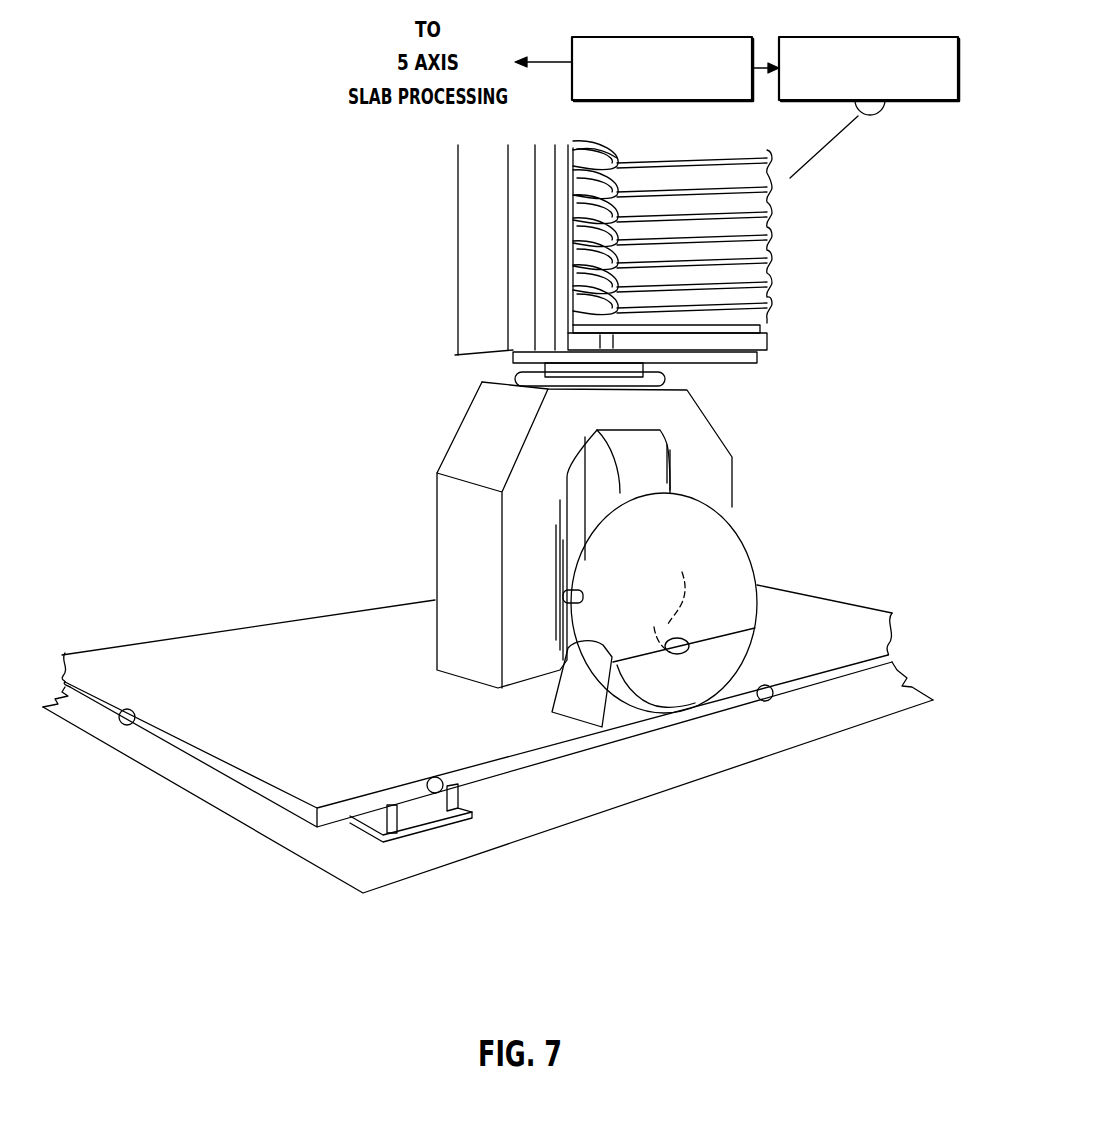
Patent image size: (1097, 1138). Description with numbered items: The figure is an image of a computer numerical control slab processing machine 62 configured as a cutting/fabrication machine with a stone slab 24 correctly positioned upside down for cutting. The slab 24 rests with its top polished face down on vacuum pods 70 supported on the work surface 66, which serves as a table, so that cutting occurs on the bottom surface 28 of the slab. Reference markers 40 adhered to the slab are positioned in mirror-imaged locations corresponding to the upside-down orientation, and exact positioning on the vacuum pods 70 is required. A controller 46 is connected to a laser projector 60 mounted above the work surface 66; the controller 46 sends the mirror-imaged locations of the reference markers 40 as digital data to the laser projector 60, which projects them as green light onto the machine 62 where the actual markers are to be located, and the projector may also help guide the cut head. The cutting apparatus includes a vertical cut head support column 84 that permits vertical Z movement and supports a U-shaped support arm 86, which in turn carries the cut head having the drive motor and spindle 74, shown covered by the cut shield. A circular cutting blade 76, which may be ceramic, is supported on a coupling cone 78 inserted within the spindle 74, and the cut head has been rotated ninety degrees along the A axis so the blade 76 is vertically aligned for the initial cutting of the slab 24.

The slab 24 is at (248, 657).
The bottom surface 28 is at (321, 714).
The reference markers 40 is at (127, 725).
The controller 46 is at (642, 37).
The laser projector 60 is at (863, 37).
The CNC slab processing machine 62 is at (380, 347).
The work surface 66 is at (777, 747).
The vacuum pods 70 is at (387, 846).
The drive motor and spindle 74 is at (683, 638).
The cutting blade 76 is at (693, 663).
The coupling cone 78 is at (671, 597).
The vertical cut head support column 84 is at (465, 221).
The U-shaped support arm 86 is at (472, 437).